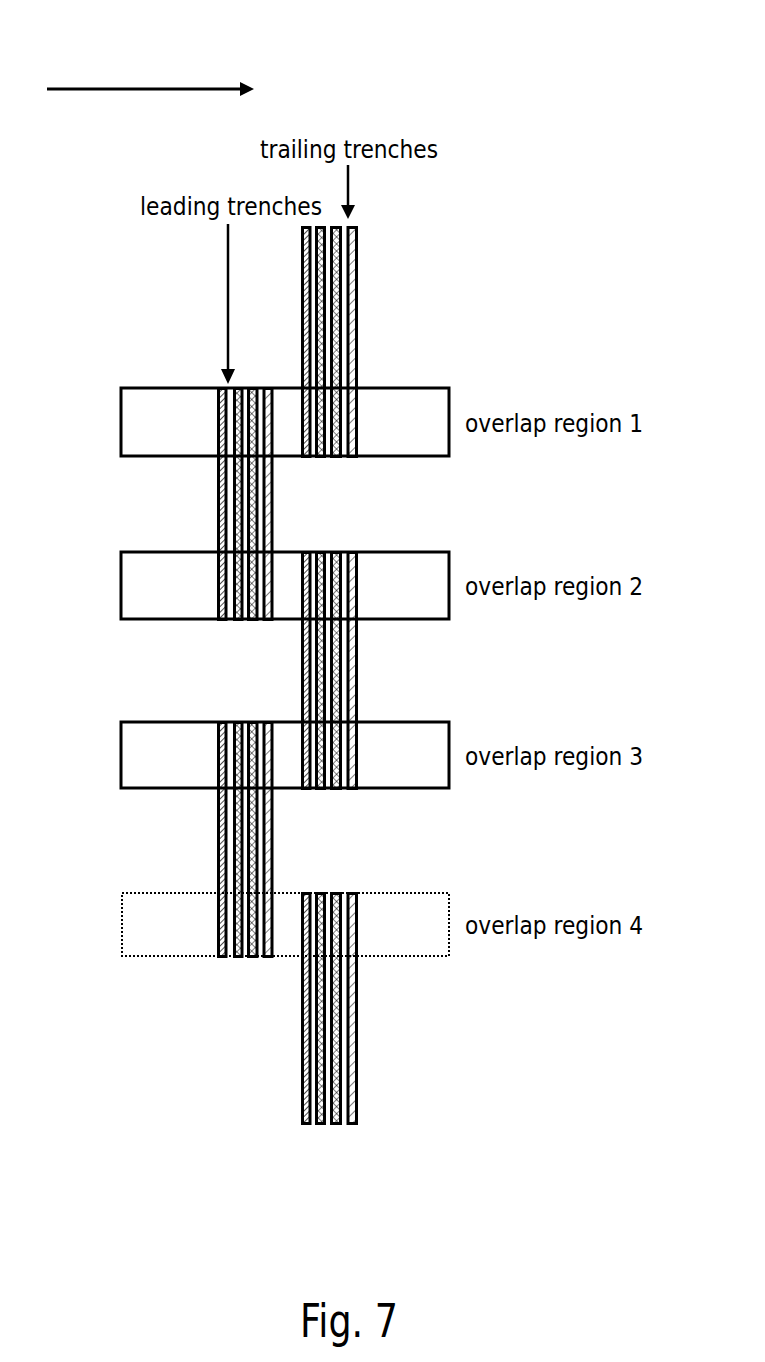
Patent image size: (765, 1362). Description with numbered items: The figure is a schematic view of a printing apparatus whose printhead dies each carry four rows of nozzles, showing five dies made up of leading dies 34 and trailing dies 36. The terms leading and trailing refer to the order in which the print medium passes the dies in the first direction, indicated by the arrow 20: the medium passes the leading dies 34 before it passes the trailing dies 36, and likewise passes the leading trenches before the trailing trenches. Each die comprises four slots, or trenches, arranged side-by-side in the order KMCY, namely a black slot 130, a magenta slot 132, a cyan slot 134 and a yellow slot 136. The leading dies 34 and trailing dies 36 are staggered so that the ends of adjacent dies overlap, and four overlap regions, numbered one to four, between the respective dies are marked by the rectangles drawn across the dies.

The scan direction 20 is at (153, 88).
The leading dies 34 is at (188, 474).
The trailing dies 36 is at (337, 732).
The black slot 130 is at (306, 1126).
The magenta slot 132 is at (320, 1126).
The cyan slot 134 is at (336, 1126).
The yellow slot 136 is at (351, 1126).